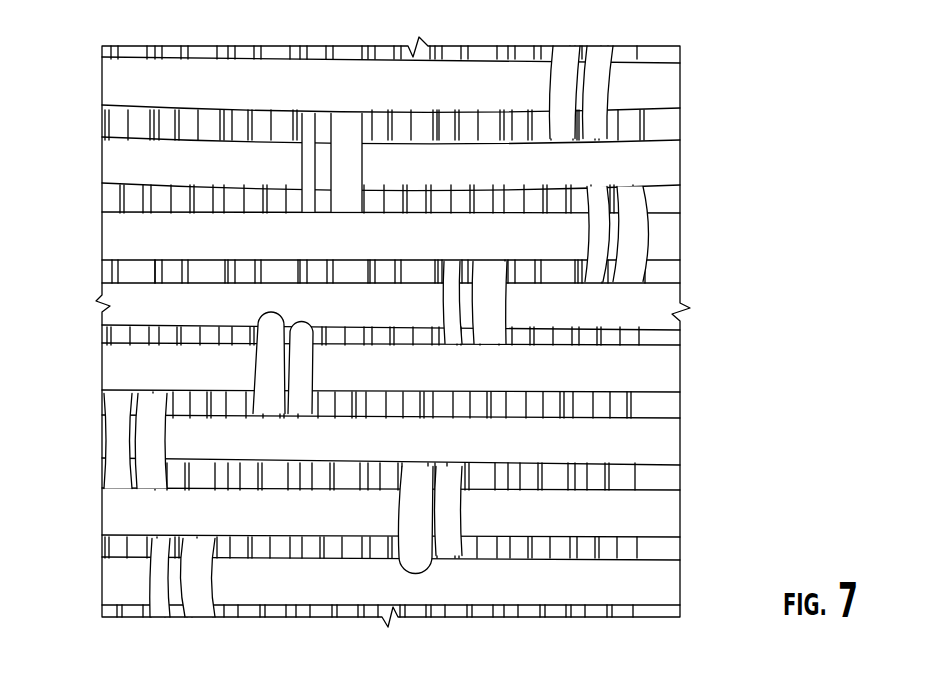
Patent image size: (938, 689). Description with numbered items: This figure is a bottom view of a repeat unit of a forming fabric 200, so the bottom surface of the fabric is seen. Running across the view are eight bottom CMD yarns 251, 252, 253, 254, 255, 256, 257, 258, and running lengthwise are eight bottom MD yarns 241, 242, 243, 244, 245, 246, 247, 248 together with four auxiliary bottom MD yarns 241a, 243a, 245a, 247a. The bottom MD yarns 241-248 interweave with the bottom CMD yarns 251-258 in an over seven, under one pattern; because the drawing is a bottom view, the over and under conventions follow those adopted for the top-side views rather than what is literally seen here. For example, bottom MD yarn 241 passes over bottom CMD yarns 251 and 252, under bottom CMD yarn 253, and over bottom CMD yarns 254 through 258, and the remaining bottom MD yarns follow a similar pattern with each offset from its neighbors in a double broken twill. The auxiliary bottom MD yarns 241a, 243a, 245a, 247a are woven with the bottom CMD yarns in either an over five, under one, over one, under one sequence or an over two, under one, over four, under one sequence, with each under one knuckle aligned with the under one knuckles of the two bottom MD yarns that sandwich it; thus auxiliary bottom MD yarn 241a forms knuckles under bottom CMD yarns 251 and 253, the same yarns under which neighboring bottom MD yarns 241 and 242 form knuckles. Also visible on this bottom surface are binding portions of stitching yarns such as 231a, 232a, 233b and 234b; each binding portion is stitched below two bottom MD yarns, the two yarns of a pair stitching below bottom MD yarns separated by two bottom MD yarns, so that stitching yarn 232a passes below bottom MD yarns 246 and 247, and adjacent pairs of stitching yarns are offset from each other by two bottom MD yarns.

The repeat unit 200 is at (783, 212).
The bottom CMD yarn 251 is at (670, 80).
The bottom CMD yarn 252 is at (670, 162).
The bottom CMD yarn 253 is at (670, 242).
The bottom CMD yarn 254 is at (670, 296).
The bottom CMD yarn 255 is at (667, 382).
The bottom CMD yarn 256 is at (667, 440).
The bottom CMD yarn 257 is at (668, 512).
The bottom CMD yarn 258 is at (668, 588).
The bottom MD yarn 241 is at (620, 339).
The bottom MD yarn 242 is at (556, 620).
The bottom MD yarn 243 is at (478, 339).
The bottom MD yarn 244 is at (421, 556).
The bottom MD yarn 245 is at (305, 339).
The bottom MD yarn 246 is at (277, 620).
The bottom MD yarn 247 is at (165, 339).
The bottom MD yarn 248 is at (135, 620).
The auxiliary bottom MD yarn 241a is at (607, 53).
The auxiliary bottom MD yarn 243a is at (453, 54).
The auxiliary bottom MD yarn 245a is at (306, 54).
The auxiliary bottom MD yarn 247a is at (169, 52).
The stitching yarn 231a is at (387, 118).
The stitching yarn 232a is at (187, 202).
The stitching yarn 233b is at (682, 338).
The stitching yarn 234b is at (543, 480).